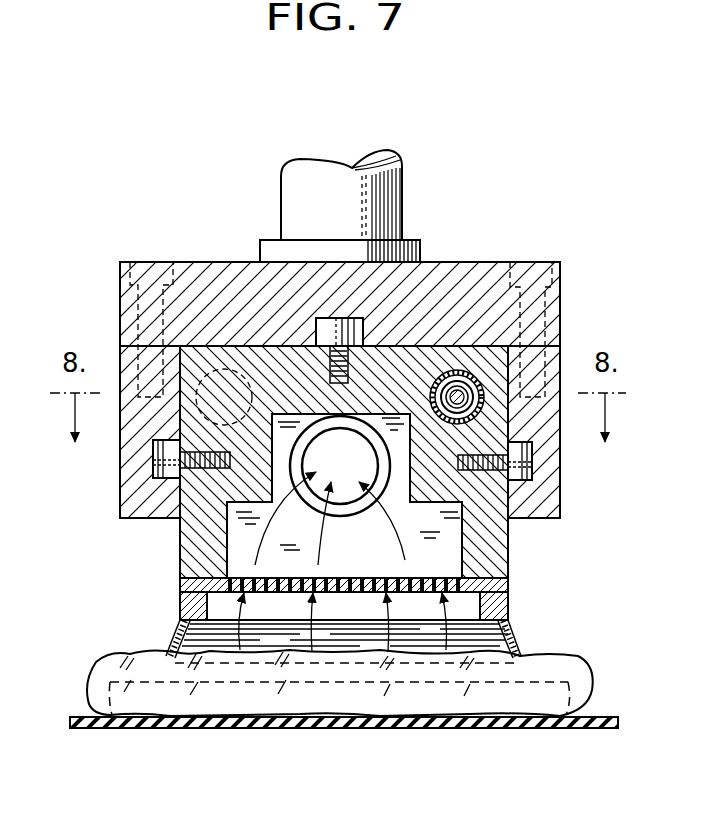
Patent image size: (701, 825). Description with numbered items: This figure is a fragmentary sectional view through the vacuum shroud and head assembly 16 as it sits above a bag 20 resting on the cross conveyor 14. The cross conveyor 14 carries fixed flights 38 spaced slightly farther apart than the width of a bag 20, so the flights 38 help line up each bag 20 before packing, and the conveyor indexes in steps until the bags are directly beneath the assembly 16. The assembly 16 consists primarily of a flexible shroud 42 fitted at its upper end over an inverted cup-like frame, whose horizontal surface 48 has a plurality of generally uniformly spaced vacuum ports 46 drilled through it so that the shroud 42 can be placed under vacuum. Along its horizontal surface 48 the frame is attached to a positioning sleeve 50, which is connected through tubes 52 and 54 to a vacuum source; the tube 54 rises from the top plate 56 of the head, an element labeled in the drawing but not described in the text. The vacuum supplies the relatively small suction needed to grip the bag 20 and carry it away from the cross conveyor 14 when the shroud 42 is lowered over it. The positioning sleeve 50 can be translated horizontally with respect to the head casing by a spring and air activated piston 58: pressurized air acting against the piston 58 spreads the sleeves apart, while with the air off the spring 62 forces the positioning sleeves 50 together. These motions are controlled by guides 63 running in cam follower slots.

The cross conveyor 14 is at (131, 733).
The vacuum shroud and head assembly 16 is at (561, 260).
The bag 20 is at (588, 668).
The fixed flights 38 is at (92, 685).
The flexible shroud 42 is at (172, 634).
The vacuum ports 46 is at (198, 590).
The horizontal surface 48 is at (478, 580).
The positioning sleeve 50 is at (492, 548).
The tube 52 is at (345, 509).
The tube 54 is at (404, 204).
The top plate 56 is at (466, 276).
The spring and air activated piston 58 is at (250, 392).
The spring 62 is at (457, 386).
The guide 63 is at (316, 326).